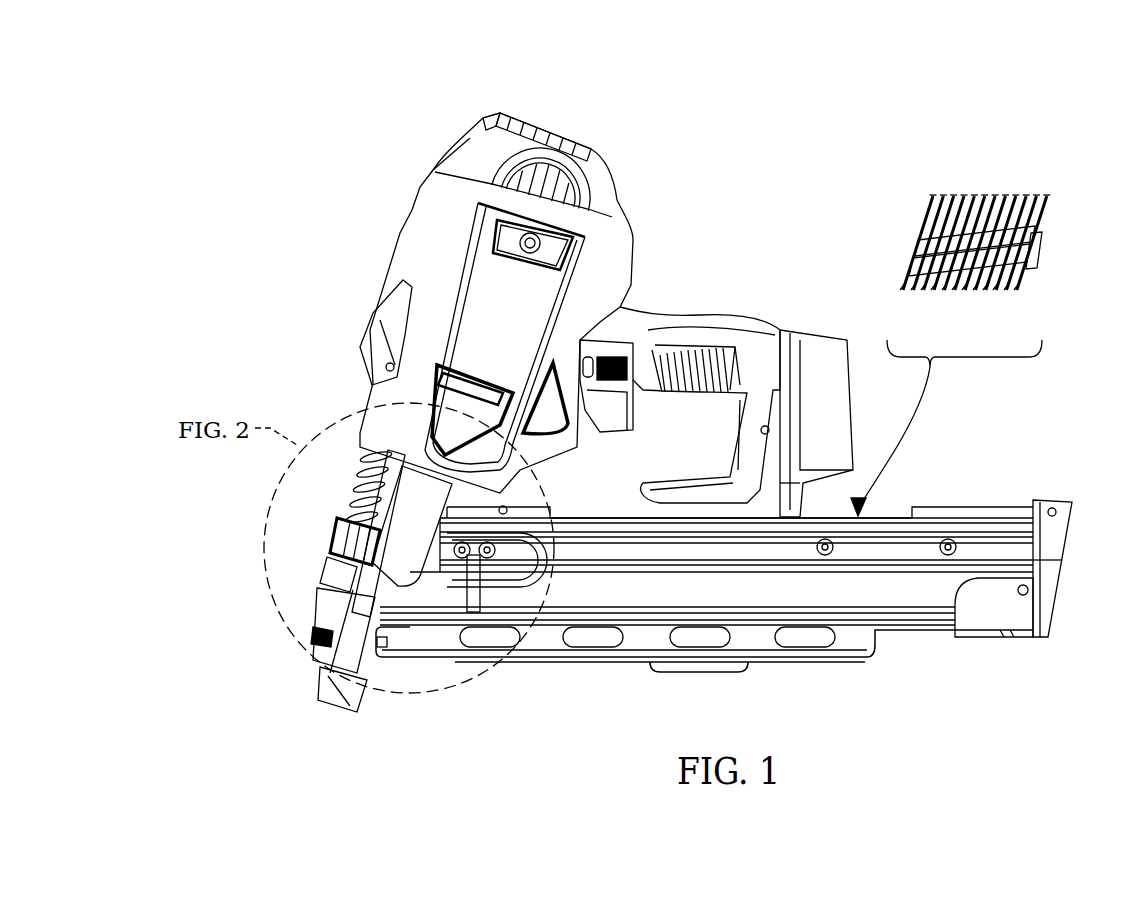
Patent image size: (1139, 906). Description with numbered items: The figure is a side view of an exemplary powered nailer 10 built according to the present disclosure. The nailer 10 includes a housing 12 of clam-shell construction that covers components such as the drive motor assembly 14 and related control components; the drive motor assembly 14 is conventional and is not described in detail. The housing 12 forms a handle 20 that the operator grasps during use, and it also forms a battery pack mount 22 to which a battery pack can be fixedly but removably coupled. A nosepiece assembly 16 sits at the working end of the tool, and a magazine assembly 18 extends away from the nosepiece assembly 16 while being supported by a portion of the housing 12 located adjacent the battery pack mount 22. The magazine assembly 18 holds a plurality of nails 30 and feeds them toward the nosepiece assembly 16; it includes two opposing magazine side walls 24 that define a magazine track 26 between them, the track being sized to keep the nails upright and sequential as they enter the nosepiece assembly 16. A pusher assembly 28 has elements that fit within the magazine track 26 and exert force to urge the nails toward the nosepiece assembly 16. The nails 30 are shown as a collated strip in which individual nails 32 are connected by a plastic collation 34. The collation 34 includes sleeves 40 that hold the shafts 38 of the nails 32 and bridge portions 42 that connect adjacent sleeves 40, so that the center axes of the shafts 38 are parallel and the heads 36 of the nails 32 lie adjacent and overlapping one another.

The powered nailer 10 is at (296, 68).
The housing 12 is at (593, 170).
The drive motor assembly 14 is at (487, 305).
The nosepiece assembly 16 is at (322, 549).
The magazine assembly 18 is at (1000, 488).
The handle 20 is at (637, 330).
The battery pack mount 22 is at (858, 505).
The magazine side walls 24 is at (890, 550).
The magazine track 26 is at (1055, 529).
The pusher assembly 28 is at (1010, 615).
The collated nails 30 is at (905, 117).
The nails 32 is at (1018, 274).
The collation 34 is at (1058, 248).
The heads 36 is at (940, 194).
The shafts 38 is at (1040, 205).
The sleeves 40 is at (916, 252).
The bridge portions 42 is at (958, 278).